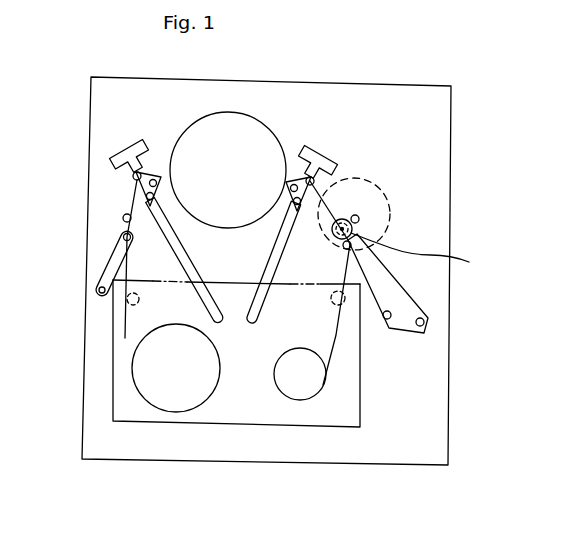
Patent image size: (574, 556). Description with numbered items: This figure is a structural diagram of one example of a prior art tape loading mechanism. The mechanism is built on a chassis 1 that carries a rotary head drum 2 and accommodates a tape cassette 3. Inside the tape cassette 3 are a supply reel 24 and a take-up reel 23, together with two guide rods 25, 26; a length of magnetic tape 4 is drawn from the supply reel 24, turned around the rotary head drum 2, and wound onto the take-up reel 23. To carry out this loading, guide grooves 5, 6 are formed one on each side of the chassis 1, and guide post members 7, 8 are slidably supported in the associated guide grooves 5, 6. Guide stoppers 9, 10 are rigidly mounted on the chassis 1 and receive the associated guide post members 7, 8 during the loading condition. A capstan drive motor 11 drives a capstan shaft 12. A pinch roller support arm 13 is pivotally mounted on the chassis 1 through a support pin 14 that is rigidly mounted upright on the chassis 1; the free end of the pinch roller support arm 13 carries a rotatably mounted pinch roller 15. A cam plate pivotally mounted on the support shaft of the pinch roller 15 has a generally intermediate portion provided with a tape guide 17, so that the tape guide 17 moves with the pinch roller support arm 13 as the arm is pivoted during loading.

The chassis 1 is at (134, 77).
The rotary head drum 2 is at (237, 112).
The tape cassette 3 is at (131, 421).
The magnetic tape 4 is at (128, 338).
The guide groove 5 is at (272, 257).
The guide groove 6 is at (182, 246).
The guide post member 7 is at (313, 191).
The guide post member 8 is at (136, 182).
The guide stopper 9 is at (323, 150).
The guide stopper 10 is at (113, 156).
The capstan drive motor 11 is at (387, 203).
The capstan shaft 12 is at (359, 219).
The pinch roller support arm 13 is at (402, 287).
The support pin 14 is at (392, 330).
The pinch roller 15 is at (422, 253).
The tape guide 17 is at (342, 244).
The take-up reel 23 is at (310, 400).
The supply reel 24 is at (137, 388).
The guide rod 25 is at (342, 310).
The guide rod 26 is at (127, 303).